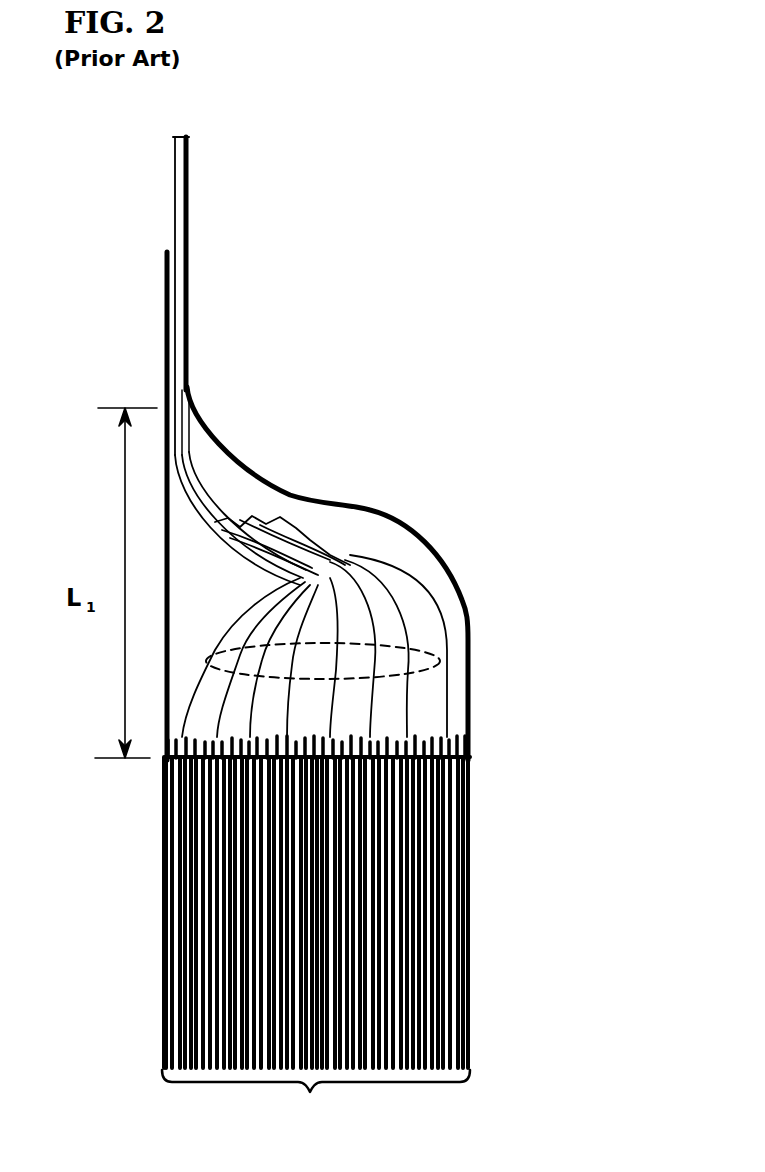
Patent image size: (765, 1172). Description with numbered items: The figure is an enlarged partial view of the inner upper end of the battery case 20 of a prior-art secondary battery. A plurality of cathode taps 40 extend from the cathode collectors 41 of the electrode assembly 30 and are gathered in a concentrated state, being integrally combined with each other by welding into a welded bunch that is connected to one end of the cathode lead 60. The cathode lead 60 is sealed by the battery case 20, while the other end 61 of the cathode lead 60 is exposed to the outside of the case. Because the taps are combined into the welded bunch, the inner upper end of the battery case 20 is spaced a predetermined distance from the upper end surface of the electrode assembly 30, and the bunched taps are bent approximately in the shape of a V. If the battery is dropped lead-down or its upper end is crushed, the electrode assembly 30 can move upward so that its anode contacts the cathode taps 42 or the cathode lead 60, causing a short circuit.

The battery case 20 is at (357, 506).
The electrode assembly 30 is at (316, 1101).
The cathode taps 40 is at (447, 657).
The cathode collectors 41 is at (166, 812).
The cathode taps 42 is at (447, 707).
The cathode lead 60 is at (185, 417).
The other end of the cathode lead 61 is at (187, 204).